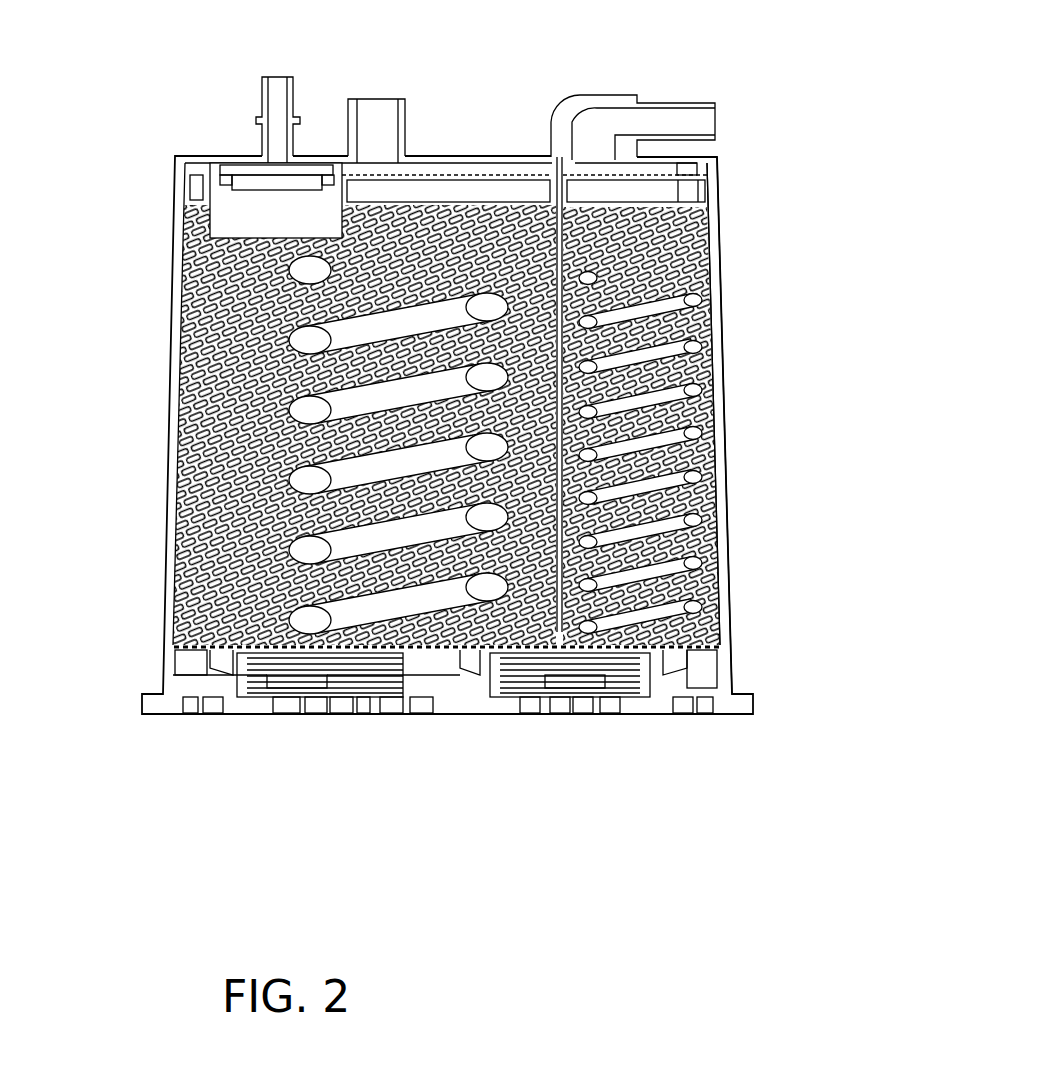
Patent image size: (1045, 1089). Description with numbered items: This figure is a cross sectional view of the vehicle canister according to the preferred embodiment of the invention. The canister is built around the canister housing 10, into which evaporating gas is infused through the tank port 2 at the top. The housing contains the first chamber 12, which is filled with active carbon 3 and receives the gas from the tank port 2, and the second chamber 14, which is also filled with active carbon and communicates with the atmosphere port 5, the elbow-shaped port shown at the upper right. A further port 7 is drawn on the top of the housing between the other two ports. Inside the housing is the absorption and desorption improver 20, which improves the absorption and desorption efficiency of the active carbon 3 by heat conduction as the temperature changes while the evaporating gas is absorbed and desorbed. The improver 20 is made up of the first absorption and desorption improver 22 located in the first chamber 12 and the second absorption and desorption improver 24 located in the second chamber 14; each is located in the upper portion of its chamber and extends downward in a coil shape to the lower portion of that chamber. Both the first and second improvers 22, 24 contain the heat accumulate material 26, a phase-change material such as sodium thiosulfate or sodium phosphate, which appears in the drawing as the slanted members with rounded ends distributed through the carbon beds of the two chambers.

The tank port 2 is at (275, 82).
The active carbon 3 is at (170, 390).
The atmosphere port 5 is at (670, 102).
The tank port 7 is at (377, 98).
The canister housing 10 is at (818, 425).
The first chamber 12 is at (718, 258).
The second chamber 14 is at (717, 220).
The absorption and desorption improver 20 is at (445, 729).
The first absorption and desorption improver 22 is at (416, 626).
The second absorption and desorption improver 24 is at (632, 630).
The heat accumulate material 26 is at (177, 548).